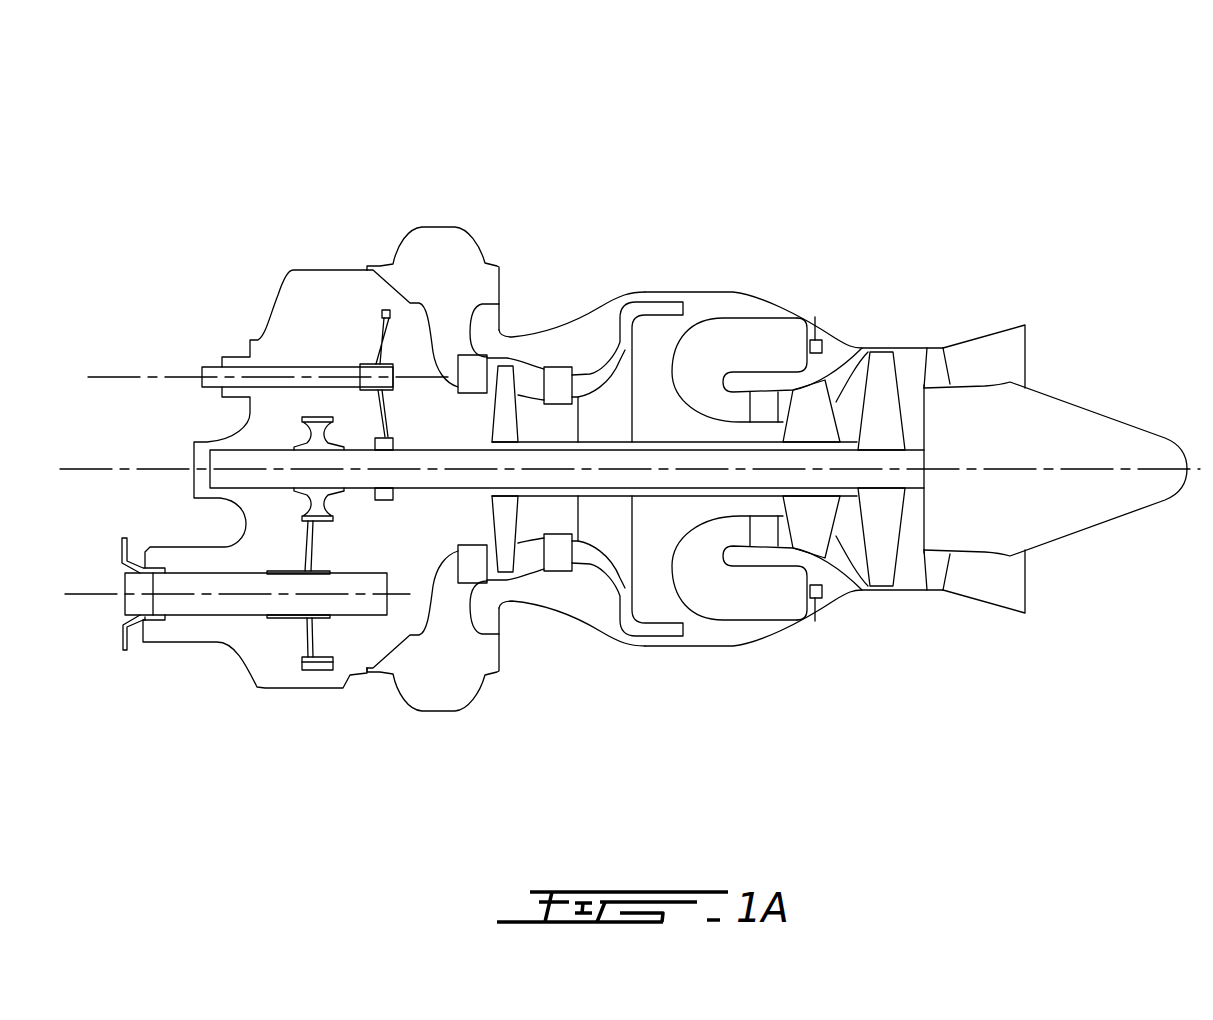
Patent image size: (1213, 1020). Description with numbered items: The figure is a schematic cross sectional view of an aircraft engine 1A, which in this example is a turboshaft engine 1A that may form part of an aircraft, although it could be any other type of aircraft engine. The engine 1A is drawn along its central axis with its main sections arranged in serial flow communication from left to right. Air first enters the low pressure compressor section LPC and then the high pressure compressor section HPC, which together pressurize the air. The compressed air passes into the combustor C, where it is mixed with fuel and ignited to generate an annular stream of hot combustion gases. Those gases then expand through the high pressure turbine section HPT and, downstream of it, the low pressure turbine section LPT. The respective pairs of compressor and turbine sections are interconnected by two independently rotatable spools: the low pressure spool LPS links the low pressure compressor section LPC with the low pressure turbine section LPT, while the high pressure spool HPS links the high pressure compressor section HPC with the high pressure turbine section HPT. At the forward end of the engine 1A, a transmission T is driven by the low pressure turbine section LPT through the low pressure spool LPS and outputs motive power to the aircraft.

The aircraft engine 1A is at (630, 402).
The transmission T is at (195, 638).
The low pressure spool LPS is at (455, 492).
The low pressure compressor section LPC is at (520, 287).
The high pressure spool HPS is at (520, 545).
The high pressure compressor section HPC is at (617, 277).
The combustor C is at (721, 648).
The high pressure turbine section HPT is at (829, 293).
The low pressure turbine section LPT is at (902, 322).